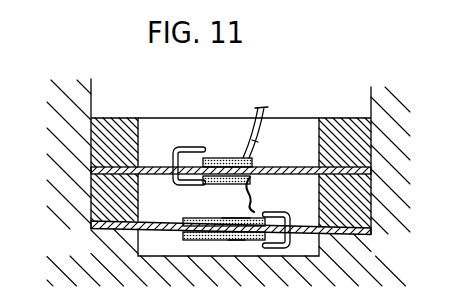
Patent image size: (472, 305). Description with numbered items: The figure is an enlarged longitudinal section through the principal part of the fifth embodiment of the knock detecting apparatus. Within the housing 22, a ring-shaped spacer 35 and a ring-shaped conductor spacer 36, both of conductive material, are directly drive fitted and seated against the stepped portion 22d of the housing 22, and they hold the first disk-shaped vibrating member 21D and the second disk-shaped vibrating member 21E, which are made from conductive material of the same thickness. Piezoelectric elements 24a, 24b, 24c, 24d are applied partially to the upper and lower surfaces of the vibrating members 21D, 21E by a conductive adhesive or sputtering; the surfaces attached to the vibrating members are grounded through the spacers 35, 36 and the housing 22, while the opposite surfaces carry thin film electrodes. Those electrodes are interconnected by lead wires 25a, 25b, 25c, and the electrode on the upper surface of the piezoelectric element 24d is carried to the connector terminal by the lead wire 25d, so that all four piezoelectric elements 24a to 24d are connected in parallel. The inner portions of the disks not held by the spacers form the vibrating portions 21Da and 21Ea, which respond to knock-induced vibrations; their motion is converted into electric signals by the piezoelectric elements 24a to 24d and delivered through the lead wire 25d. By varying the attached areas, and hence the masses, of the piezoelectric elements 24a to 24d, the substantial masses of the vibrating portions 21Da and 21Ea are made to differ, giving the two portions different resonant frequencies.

The housing 22 is at (393, 127).
The stepped portion 22d is at (356, 234).
The ring-shaped spacer 35 is at (368, 206).
The ring-shaped conductor spacer 36 is at (141, 132).
The second disk-shaped vibrating member 21E is at (88, 166).
The first disk-shaped vibrating member 21D is at (91, 223).
The vibrating portion 21Ea is at (229, 158).
The vibrating portion 21Da is at (233, 240).
The piezoelectric element 24a is at (195, 240).
The piezoelectric element 24b is at (192, 217).
The piezoelectric element 24c is at (222, 218).
The piezoelectric element 24d is at (252, 159).
The lead wire 25a is at (296, 247).
The lead wire 25b is at (276, 194).
The lead wire 25c is at (187, 147).
The lead wire 25d is at (267, 123).